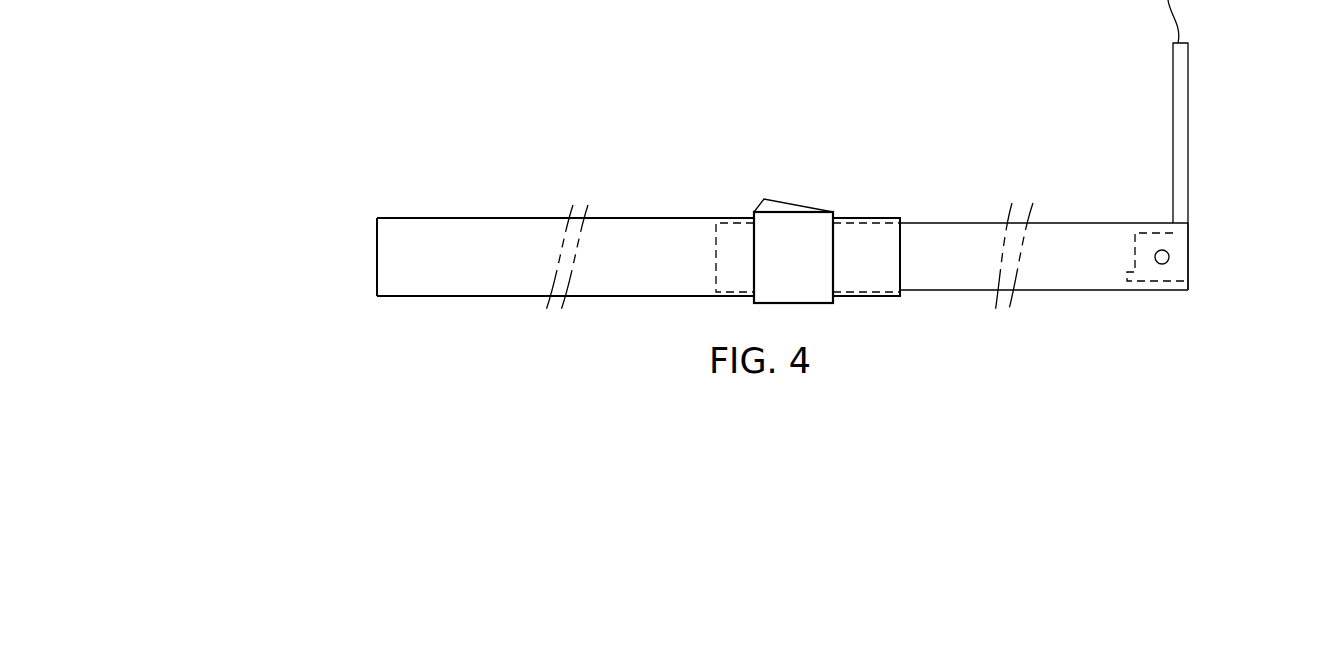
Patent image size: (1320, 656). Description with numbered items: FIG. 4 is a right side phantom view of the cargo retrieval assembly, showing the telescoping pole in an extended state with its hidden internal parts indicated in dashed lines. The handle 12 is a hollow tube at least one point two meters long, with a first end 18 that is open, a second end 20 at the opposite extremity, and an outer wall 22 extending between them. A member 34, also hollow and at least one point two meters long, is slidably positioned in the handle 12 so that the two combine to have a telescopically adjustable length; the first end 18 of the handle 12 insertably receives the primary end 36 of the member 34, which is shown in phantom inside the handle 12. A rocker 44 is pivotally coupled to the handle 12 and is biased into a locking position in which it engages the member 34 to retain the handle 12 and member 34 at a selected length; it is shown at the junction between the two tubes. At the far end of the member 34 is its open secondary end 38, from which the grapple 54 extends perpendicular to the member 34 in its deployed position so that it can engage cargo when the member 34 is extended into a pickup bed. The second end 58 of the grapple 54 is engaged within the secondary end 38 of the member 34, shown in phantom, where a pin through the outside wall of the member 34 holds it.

The handle 12 is at (447, 218).
The first end 18 is at (900, 247).
The second end 20 is at (377, 261).
The outer wall 22 is at (627, 228).
The member 34 is at (1060, 292).
The primary end 36 is at (716, 258).
The secondary end 38 is at (1188, 248).
The rocker 44 is at (783, 199).
The grapple 54 is at (1188, 130).
The second end 58 is at (1145, 283).